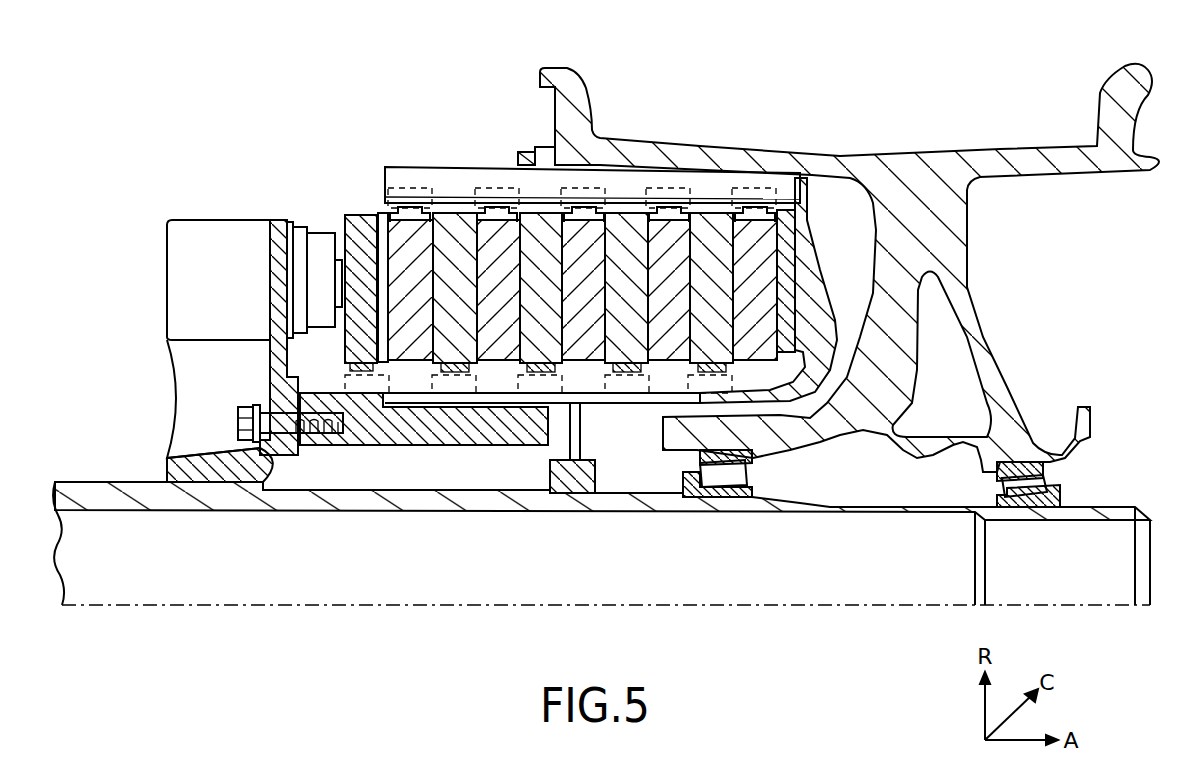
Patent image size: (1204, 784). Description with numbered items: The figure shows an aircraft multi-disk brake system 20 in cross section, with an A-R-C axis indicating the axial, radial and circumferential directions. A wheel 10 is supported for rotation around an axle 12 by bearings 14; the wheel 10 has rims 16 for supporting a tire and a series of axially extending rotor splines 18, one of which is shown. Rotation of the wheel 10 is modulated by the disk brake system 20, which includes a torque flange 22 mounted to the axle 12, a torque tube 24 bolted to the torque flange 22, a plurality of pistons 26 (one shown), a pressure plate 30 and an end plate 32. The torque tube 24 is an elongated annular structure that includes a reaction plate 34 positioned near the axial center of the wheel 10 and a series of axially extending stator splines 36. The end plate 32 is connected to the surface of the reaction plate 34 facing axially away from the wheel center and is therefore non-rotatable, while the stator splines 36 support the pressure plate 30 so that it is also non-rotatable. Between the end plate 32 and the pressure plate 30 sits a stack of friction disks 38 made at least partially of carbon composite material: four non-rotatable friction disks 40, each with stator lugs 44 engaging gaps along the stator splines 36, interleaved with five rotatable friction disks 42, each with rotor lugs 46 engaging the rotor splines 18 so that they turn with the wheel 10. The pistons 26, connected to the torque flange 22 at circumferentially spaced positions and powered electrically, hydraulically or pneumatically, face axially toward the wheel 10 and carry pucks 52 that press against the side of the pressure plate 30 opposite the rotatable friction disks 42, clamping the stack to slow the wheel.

The wheel 10 is at (978, 132).
The axle 12 is at (884, 507).
The bearings 14 is at (750, 462).
The rims 16 is at (580, 82).
The rotor splines 18 is at (537, 164).
The multi-disk brake system 20 is at (295, 172).
The torque flange 22 is at (284, 390).
The torque tube 24 is at (450, 398).
The pistons 26 is at (312, 233).
The pressure plate 30 is at (346, 213).
The end plate 32 is at (788, 207).
The reaction plate 34 is at (830, 337).
The stator splines 36 is at (500, 388).
The friction disks 38 is at (374, 200).
The non-rotatable friction disk 40 is at (725, 235).
The rotatable friction disk 42 is at (412, 207).
The stator lugs 44 is at (657, 393).
The rotor lugs 46 is at (610, 195).
The pucks 52 is at (340, 228).